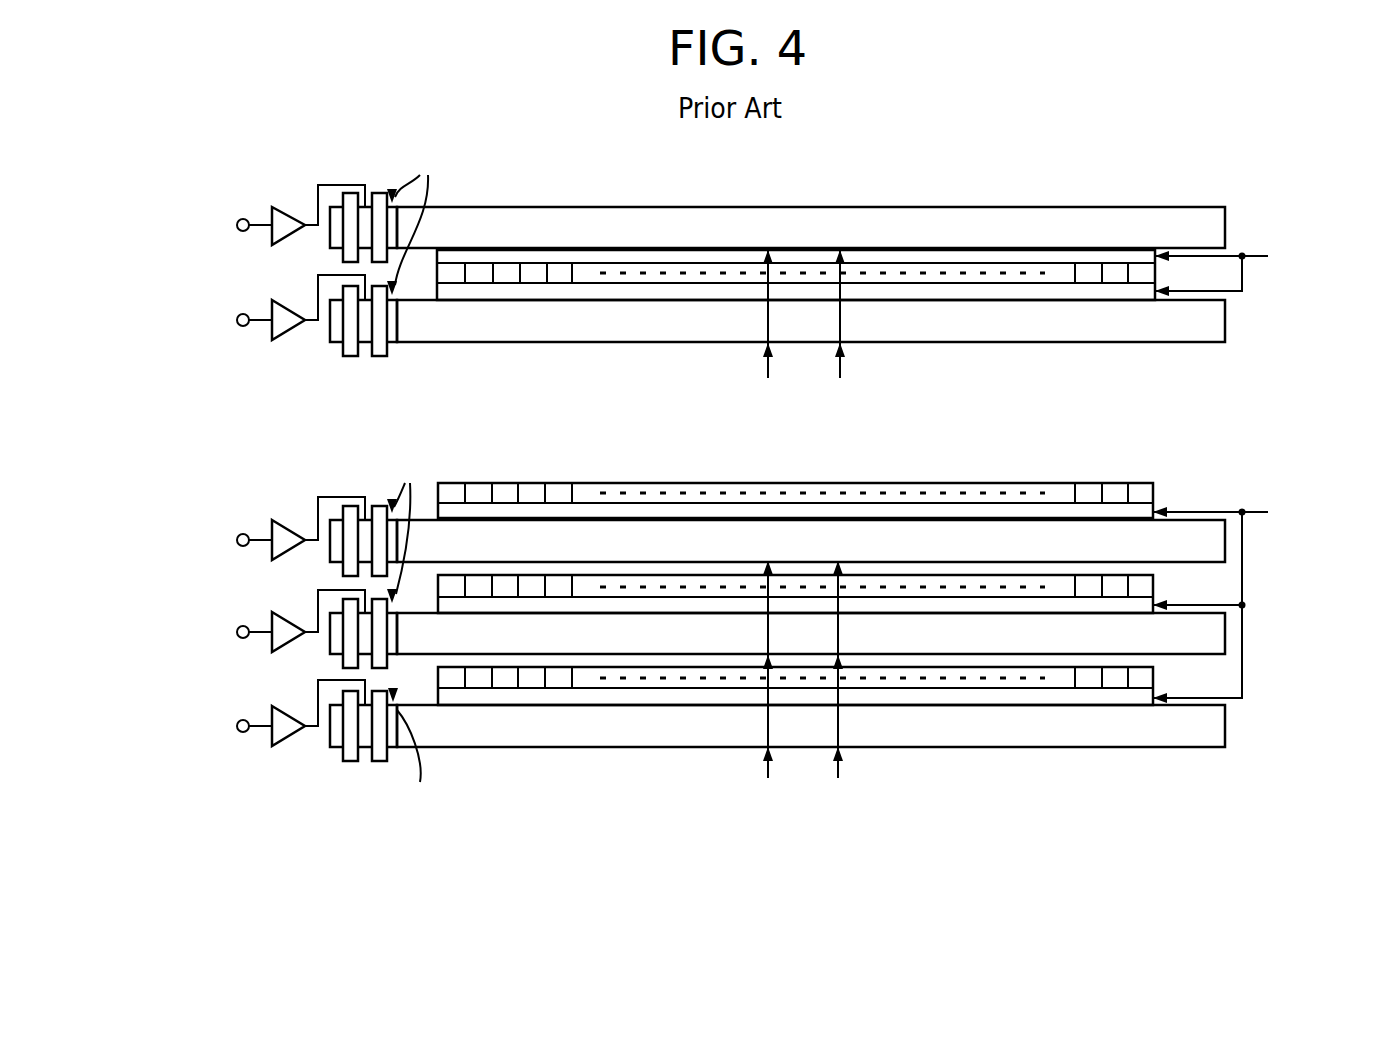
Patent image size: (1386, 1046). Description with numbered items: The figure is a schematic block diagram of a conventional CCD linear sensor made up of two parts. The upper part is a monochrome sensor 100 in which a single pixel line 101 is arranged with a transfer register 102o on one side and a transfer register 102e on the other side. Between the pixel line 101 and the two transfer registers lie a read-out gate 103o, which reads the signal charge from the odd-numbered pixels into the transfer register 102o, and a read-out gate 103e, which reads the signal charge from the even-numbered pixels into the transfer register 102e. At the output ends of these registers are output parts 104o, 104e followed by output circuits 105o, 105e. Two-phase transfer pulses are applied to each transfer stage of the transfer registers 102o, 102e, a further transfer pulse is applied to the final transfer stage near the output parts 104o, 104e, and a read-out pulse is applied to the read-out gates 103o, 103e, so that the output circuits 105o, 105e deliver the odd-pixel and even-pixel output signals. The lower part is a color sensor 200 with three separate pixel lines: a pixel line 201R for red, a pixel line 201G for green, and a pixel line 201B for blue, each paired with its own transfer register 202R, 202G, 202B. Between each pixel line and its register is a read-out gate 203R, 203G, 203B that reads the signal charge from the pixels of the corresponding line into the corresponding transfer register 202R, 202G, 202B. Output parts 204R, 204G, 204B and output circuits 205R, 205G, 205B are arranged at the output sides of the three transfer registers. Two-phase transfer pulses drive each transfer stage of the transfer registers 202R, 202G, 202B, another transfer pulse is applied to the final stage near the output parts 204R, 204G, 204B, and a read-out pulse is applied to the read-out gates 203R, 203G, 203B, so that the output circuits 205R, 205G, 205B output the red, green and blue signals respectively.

The monochrome sensor 100 is at (1148, 198).
The pixel line 101 is at (508, 270).
The transfer register 102o is at (580, 218).
The transfer register 102e is at (575, 328).
The read-out gate 103o is at (668, 252).
The read-out gate 103e is at (658, 295).
The output part 104o is at (326, 174).
The output part 104e is at (331, 356).
The output circuit 105o is at (292, 234).
The output circuit 105e is at (292, 326).
The color sensor 200 is at (1136, 470).
The pixel line for R 201R is at (488, 497).
The transfer register 202R is at (572, 540).
The read-out gate 203R is at (672, 510).
The pixel line for G 201G is at (748, 583).
The transfer register 202G is at (845, 542).
The read-out gate 203G is at (1003, 510).
The pixel line for B 201B is at (480, 680).
The transfer register 202B is at (568, 730).
The read-out gate 203B is at (638, 697).
The output part 204R is at (311, 498).
The output part 204G is at (311, 599).
The output part 204B is at (327, 759).
The output circuit 205R is at (297, 538).
The output circuit 205G is at (298, 648).
The output circuit 205B is at (298, 742).